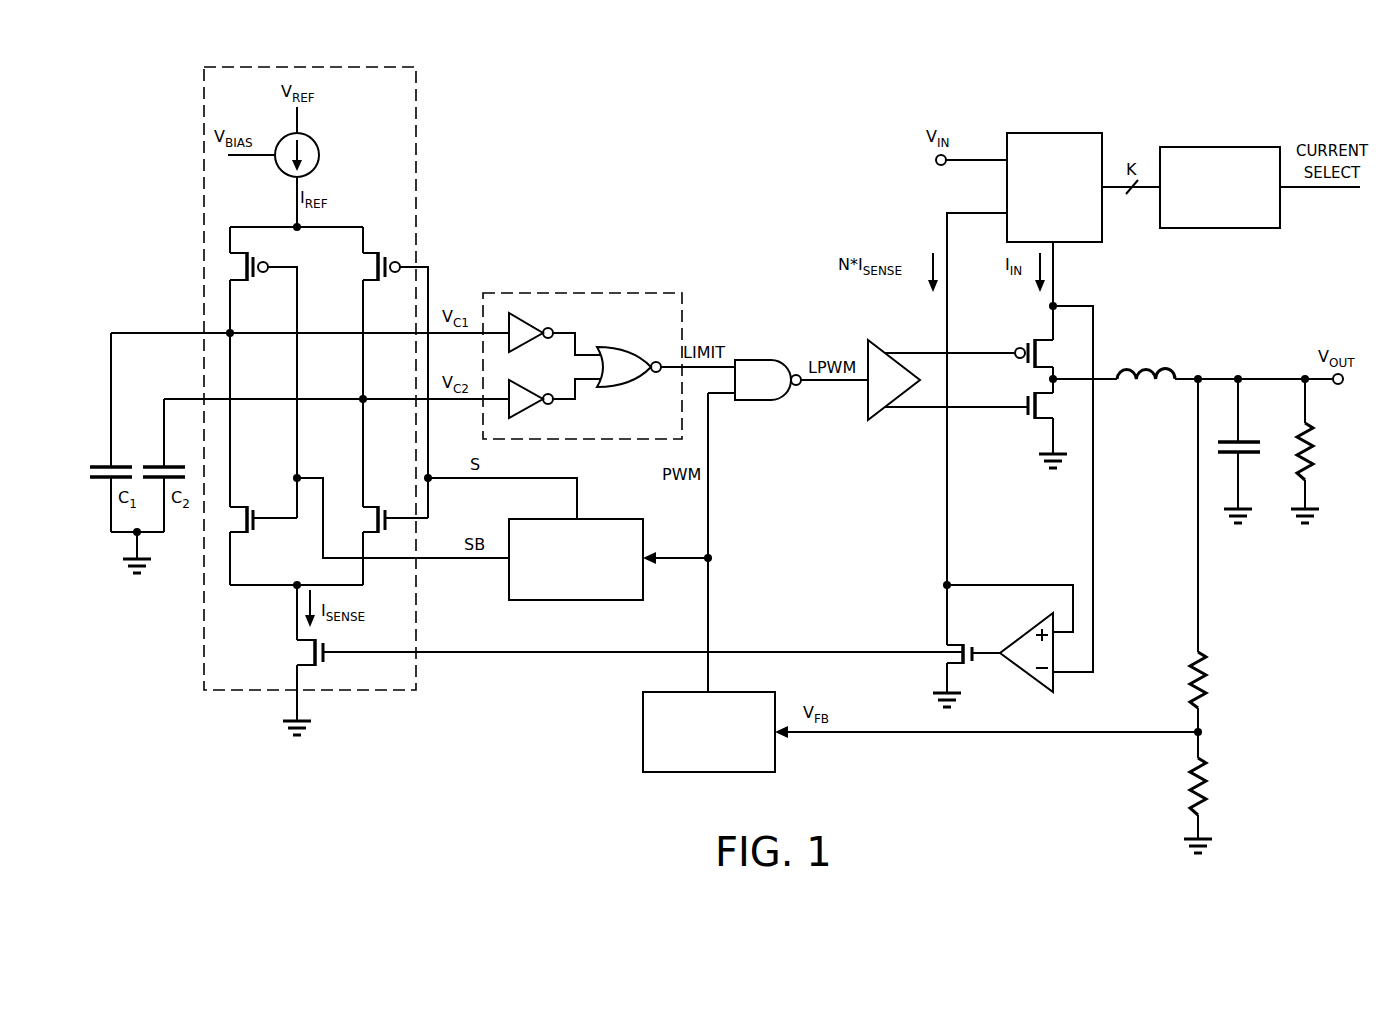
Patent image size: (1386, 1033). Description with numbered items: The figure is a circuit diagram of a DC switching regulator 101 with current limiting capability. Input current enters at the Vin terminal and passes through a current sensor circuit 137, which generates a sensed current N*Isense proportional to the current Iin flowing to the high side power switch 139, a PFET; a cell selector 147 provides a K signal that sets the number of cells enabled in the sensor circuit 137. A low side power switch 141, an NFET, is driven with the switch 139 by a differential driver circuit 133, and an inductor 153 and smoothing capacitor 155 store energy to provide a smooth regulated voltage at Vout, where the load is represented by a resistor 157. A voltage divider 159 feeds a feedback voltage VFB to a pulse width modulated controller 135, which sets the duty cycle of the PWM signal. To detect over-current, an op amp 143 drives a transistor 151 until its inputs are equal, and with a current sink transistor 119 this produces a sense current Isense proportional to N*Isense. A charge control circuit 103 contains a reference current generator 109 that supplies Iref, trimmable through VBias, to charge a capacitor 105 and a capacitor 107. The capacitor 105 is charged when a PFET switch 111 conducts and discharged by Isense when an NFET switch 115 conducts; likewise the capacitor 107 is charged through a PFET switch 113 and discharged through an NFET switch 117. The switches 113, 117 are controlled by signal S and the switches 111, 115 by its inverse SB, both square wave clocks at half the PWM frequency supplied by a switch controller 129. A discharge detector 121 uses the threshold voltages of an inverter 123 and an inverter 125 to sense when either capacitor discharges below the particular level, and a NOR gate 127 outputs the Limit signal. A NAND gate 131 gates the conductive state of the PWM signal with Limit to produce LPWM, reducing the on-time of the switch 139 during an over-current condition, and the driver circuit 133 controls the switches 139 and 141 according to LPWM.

The switching regulator 101 is at (1316, 96).
The charge control circuit 103 is at (416, 152).
The capacitor 105 is at (96, 465).
The capacitor 107 is at (149, 465).
The reference current generator 109 is at (320, 158).
The switch 111 is at (262, 285).
The switch 113 is at (372, 268).
The switch 115 is at (268, 531).
The switch 117 is at (375, 519).
The transistor 119 is at (304, 652).
The discharge detector 121 is at (600, 293).
The inverter 123 is at (530, 326).
The inverter 125 is at (515, 388).
The NOR gate 127 is at (636, 353).
The switch controller 129 is at (608, 519).
The NAND gate 131 is at (754, 360).
The differential driver circuit 133 is at (866, 414).
The pulse width modulated controller 135 is at (643, 734).
The current sensor circuit 137 is at (1066, 133).
The high side power switch 139 is at (1024, 339).
The low side power switch 141 is at (1026, 425).
The op amp 143 is at (1028, 676).
The cell selector 147 is at (1234, 147).
The transistor 151 is at (974, 643).
The inductor 153 is at (1154, 358).
The smoothing capacitor 155 is at (1246, 439).
The resistor 157 is at (1308, 450).
The voltage divider 159 is at (1250, 694).